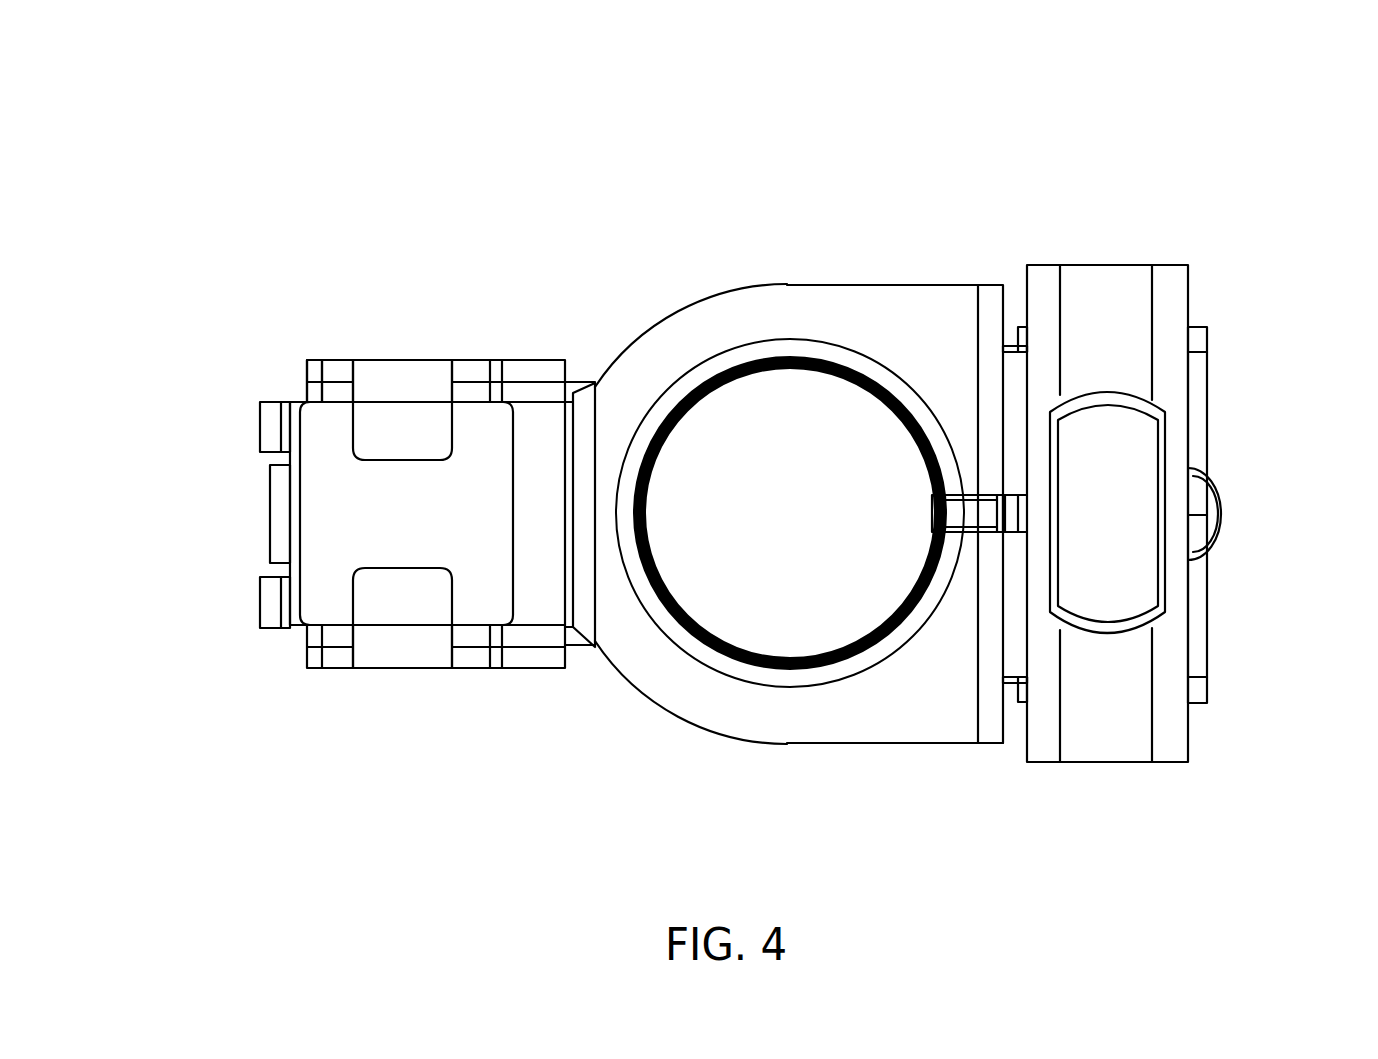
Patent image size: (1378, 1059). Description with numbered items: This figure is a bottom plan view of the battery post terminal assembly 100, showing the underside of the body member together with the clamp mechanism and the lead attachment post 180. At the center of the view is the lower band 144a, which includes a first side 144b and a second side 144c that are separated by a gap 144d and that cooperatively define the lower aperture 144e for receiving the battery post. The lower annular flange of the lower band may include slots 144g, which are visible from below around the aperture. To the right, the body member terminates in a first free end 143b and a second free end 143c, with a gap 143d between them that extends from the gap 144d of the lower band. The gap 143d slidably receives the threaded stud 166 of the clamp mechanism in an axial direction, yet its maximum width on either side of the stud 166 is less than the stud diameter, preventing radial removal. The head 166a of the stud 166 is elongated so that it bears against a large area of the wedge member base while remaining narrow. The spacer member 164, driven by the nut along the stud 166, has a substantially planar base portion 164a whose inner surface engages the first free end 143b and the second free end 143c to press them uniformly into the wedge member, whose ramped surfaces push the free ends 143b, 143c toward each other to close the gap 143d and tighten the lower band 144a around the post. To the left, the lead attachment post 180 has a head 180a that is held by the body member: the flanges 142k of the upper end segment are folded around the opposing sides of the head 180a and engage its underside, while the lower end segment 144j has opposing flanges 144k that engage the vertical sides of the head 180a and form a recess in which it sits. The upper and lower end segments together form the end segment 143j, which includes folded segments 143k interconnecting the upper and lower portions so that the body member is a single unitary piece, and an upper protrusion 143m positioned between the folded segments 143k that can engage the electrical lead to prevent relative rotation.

The battery post terminal assembly 100 is at (360, 130).
The second side of the lower band 144c is at (872, 267).
The lower band 144a is at (750, 287).
The lower aperture 144e is at (775, 435).
The flanges of the lower end segment 144k is at (343, 393).
The lead attachment post 180 is at (442, 465).
The head of the lead attachment post 180a is at (427, 497).
The lower end segment 144j is at (217, 386).
The end segment 143j is at (308, 368).
The folded segments 143k is at (268, 432).
The upper protrusion 143m is at (277, 530).
The flanges of the upper end segment 142k is at (374, 603).
The slots 144g is at (643, 562).
The gap of the lower band 144d is at (902, 528).
The first side of the lower band 144b is at (873, 750).
The second free end 143c is at (1197, 383).
The gap between free ends 143d is at (1220, 495).
The threaded stud 166 is at (1195, 512).
The head of the threaded stud 166a is at (1133, 530).
The first free end 143b is at (1197, 625).
The spacer member 164 is at (1166, 513).
The base portion of the spacer member 164a is at (1125, 720).